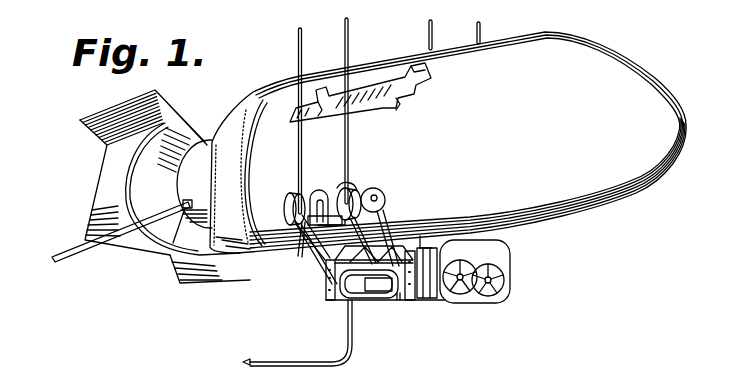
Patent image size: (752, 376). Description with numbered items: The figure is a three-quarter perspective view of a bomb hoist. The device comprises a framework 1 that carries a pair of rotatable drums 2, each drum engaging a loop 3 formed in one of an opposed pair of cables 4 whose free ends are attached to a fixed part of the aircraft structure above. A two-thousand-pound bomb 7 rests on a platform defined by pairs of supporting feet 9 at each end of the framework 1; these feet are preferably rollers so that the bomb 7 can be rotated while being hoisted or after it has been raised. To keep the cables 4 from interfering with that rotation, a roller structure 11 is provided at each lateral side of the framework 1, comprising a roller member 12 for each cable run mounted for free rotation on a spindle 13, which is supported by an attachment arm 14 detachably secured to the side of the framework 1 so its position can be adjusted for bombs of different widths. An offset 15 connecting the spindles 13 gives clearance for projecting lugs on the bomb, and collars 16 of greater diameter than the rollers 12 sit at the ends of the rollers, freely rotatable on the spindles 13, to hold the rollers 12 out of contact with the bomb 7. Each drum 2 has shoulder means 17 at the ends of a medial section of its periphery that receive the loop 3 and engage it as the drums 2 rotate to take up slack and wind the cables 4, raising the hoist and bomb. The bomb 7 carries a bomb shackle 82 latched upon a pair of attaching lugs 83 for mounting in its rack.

The framework 1 is at (410, 303).
The rotatable drums 2 is at (343, 283).
The loop 3 is at (378, 299).
The cables 4 is at (303, 48).
The bomb 7 is at (448, 142).
The supporting feet 9 is at (425, 248).
The roller structure 11 is at (361, 188).
The roller member 12 is at (290, 208).
The spindle 13 is at (384, 197).
The attachment arm 14 is at (300, 228).
The offset 15 is at (328, 191).
The collars 16 is at (290, 198).
The shoulder means 17 is at (352, 302).
The bomb shackle 82 is at (422, 84).
The attaching lugs 83 is at (413, 66).